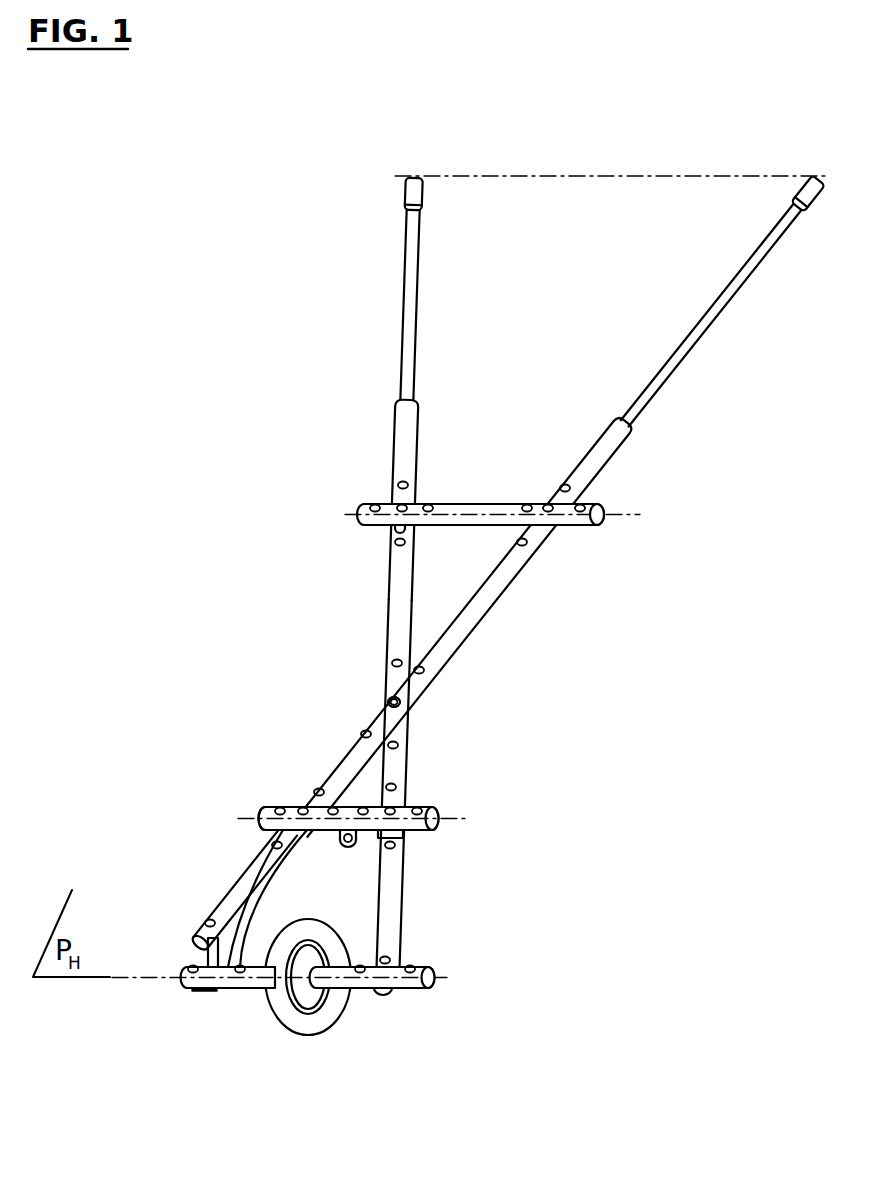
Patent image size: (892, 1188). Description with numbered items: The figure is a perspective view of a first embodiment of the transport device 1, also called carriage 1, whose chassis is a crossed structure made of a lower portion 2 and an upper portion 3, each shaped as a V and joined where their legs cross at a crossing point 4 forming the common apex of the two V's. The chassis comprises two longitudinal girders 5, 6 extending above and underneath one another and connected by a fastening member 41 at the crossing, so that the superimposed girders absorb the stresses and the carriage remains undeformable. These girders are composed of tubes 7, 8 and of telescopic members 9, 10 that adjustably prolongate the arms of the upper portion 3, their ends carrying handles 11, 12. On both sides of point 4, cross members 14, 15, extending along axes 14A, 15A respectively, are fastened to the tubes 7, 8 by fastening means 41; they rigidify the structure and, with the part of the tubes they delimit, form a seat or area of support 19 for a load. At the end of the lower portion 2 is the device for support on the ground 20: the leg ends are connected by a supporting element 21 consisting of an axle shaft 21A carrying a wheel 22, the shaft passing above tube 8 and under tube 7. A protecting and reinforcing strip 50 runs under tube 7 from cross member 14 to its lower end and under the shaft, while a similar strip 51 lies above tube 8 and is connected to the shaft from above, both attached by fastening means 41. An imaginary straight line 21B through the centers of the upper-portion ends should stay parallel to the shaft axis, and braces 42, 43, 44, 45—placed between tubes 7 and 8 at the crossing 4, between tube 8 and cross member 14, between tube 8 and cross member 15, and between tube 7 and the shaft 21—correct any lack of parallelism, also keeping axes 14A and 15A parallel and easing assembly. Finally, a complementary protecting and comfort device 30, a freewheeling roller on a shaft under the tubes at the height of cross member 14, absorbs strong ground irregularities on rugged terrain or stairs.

The transport device 1 is at (451, 610).
The lower portion 2 is at (356, 783).
The upper portion 3 is at (521, 381).
The crossing point 4 is at (407, 708).
The longitudinal girder 5 is at (325, 763).
The longitudinal girder 6 is at (381, 625).
The tube 7 is at (487, 588).
The tube 8 is at (400, 572).
The telescopic member 9 is at (710, 320).
The telescopic member 10 is at (408, 302).
The handle 11 is at (812, 178).
The handle 12 is at (410, 188).
The cross member 14 is at (440, 808).
The axis of cross member 14 14A is at (253, 819).
The cross member 15 is at (602, 510).
The axis of cross member 15 15A is at (603, 515).
The area of support 19 is at (455, 618).
The device for support on the ground 20 is at (315, 1043).
The supporting element 21 is at (353, 982).
The axle shaft 21A is at (437, 978).
The imaginary straight line 21B is at (522, 176).
The wheel 22 is at (287, 1003).
The complementary protecting and comfort device 30 is at (355, 853).
The fastening means 41 is at (388, 503).
The brace 42 is at (407, 717).
The brace 43 is at (402, 837).
The brace 44 is at (372, 531).
The brace 45 is at (205, 950).
The protecting and reinforcing strip 50 is at (240, 923).
The protecting and reinforcing strip 51 is at (390, 915).